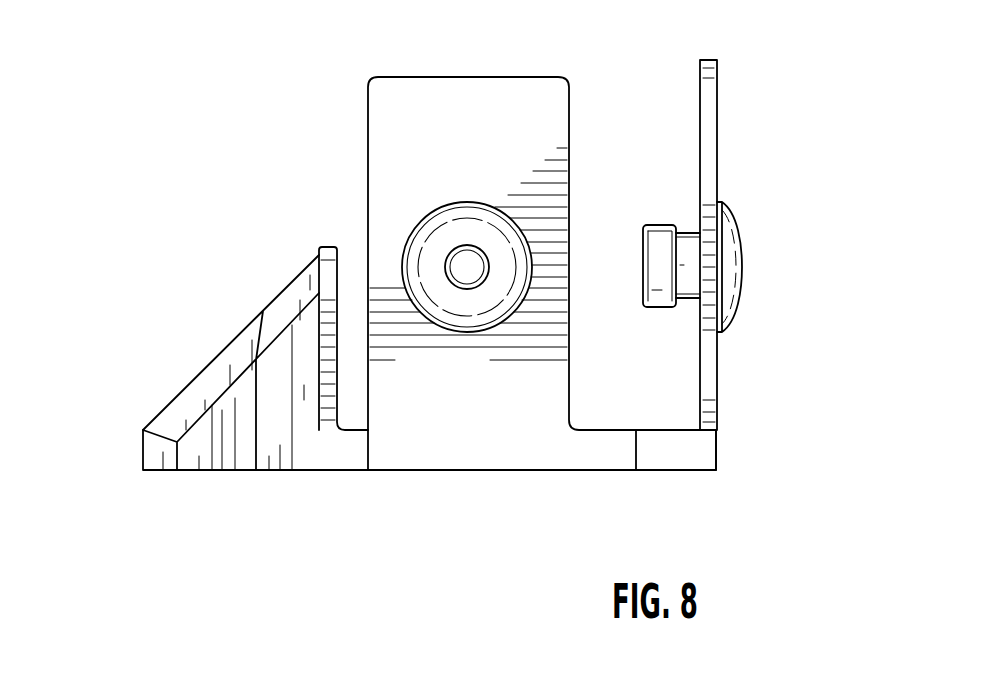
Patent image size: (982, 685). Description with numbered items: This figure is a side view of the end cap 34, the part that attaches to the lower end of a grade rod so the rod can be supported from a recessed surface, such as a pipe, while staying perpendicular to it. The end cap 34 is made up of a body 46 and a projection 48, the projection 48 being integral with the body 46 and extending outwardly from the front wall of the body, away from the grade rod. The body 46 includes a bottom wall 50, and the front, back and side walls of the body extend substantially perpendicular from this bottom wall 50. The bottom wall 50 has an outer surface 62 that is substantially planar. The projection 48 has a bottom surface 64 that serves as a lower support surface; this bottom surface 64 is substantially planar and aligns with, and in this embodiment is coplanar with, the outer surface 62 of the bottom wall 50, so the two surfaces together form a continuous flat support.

The end cap 34 is at (762, 72).
The body 46 is at (723, 478).
The projection 48 is at (148, 478).
The bottom wall 50 is at (714, 450).
The outer surface 62 is at (590, 469).
The bottom surface 64 is at (288, 470).